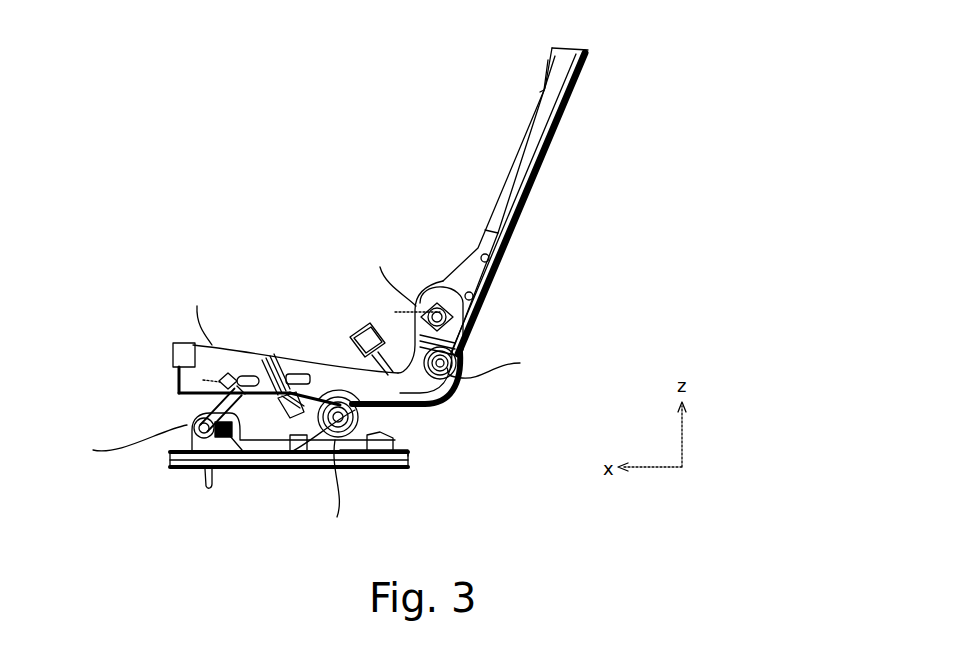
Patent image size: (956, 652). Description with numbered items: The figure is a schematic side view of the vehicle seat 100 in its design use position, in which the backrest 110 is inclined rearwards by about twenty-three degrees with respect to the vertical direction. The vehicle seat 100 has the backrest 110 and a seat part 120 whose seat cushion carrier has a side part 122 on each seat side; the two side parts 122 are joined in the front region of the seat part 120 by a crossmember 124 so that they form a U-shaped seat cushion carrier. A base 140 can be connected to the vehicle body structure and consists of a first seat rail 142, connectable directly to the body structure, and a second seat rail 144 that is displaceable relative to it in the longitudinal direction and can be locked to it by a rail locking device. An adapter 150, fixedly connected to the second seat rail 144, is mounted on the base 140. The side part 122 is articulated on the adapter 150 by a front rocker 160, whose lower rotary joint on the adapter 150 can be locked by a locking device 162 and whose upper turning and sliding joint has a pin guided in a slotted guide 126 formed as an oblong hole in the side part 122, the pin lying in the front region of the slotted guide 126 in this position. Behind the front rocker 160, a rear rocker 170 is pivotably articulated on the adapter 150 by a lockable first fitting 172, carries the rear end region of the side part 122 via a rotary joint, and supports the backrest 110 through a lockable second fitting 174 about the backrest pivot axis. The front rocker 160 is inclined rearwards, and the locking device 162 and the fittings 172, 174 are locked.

The vehicle seat 100 is at (343, 196).
The backrest 110 is at (575, 90).
The seat part 120 is at (232, 329).
The side part 122 is at (283, 345).
The crossmember 124 is at (176, 352).
The slotted guide 126 is at (255, 345).
The base 140 is at (146, 461).
The first seat rail 142 is at (398, 470).
The second seat rail 144 is at (408, 455).
The adapter 150 is at (222, 472).
The front rocker 160 is at (183, 393).
The locking device 162 is at (240, 470).
The rear rocker 170 is at (423, 410).
The first fitting 172 is at (353, 453).
The second fitting 174 is at (447, 312).